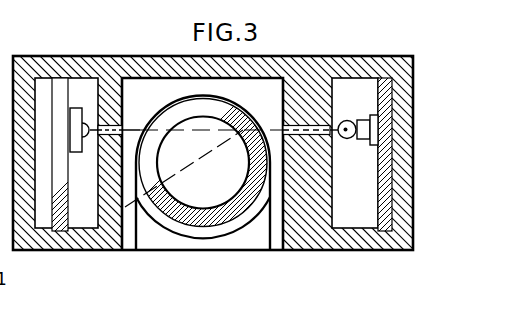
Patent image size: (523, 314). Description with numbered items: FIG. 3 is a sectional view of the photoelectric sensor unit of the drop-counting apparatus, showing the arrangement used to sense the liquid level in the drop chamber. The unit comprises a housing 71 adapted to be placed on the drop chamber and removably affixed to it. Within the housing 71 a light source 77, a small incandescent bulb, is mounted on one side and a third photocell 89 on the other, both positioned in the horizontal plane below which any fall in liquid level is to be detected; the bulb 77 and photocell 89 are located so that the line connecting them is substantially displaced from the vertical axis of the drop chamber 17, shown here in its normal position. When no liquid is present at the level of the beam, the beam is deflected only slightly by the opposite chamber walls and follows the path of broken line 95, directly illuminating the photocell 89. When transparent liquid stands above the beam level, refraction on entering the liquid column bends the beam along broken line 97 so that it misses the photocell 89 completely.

The rotatable member 17 is at (174, 216).
The housing 71 is at (301, 245).
The light source 77 is at (347, 139).
The third photocell 89 is at (76, 152).
The broken line 95 is at (132, 129).
The broken line 97 is at (188, 165).